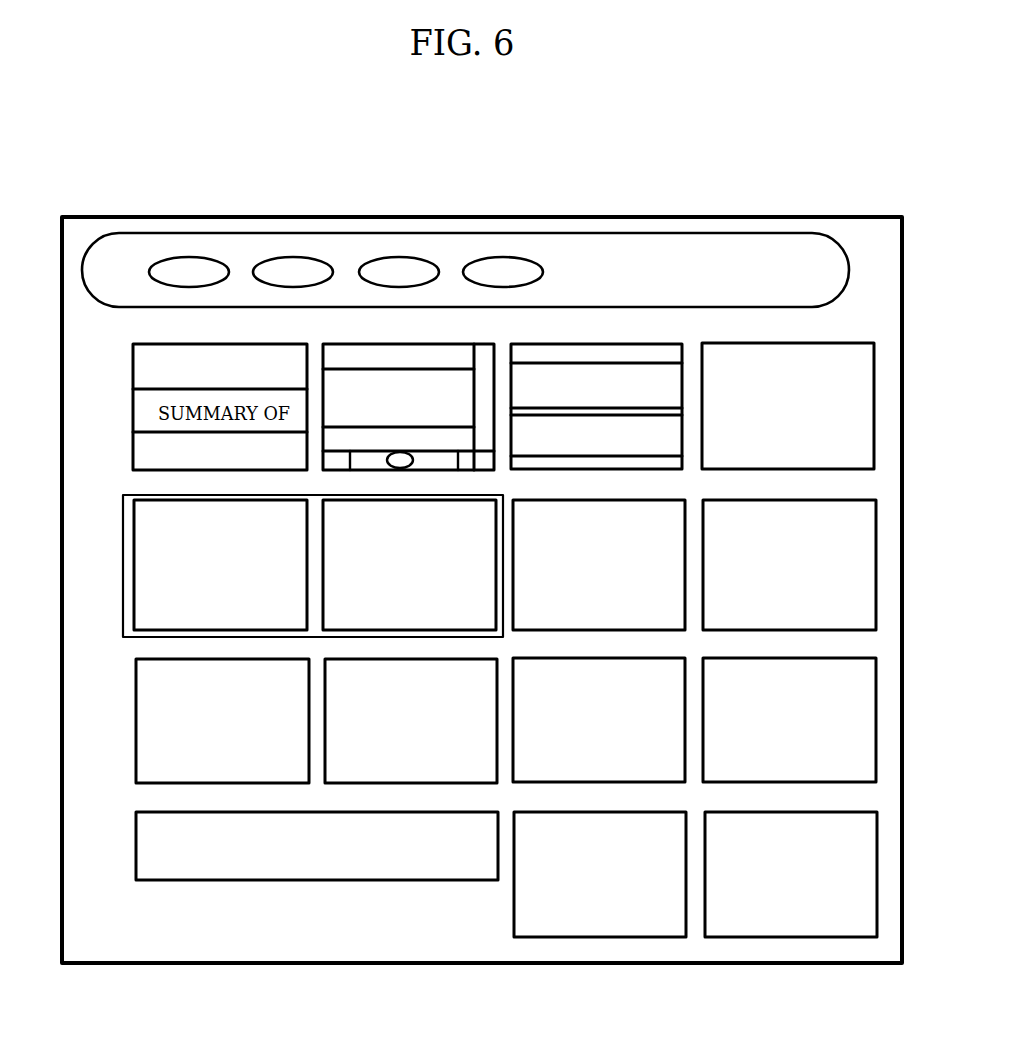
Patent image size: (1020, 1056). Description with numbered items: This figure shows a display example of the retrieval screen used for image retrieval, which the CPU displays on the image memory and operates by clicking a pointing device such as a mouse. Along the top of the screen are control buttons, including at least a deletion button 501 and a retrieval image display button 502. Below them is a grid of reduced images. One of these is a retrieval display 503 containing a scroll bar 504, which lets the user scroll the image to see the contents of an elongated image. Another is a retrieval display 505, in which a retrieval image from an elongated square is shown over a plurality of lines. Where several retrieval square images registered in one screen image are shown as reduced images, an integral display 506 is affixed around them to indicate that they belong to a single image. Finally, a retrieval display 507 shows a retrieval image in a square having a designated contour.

The deletion button 501 is at (293, 268).
The retrieval image display button 502 is at (192, 268).
The retrieval display 503 is at (432, 357).
The scroll bar 504 is at (448, 460).
The retrieval display 505 is at (608, 455).
The integral display 506 is at (130, 640).
The retrieval display 507 is at (307, 870).